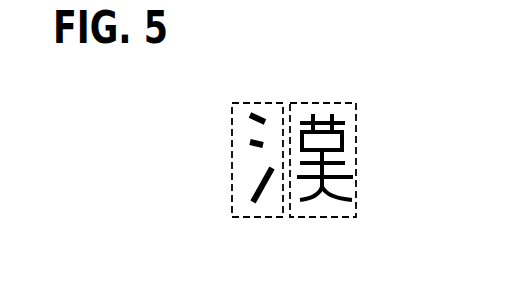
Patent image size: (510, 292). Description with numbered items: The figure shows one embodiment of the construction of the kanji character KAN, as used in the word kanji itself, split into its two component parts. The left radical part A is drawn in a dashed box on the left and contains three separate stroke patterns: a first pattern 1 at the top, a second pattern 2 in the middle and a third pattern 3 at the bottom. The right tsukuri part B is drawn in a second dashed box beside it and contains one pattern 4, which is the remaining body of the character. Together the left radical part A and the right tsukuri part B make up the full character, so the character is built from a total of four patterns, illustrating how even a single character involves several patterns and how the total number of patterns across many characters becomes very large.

The left radical part A is at (257, 102).
The right tsukuri part B is at (330, 102).
The first pattern 1 is at (250, 116).
The second pattern 2 is at (250, 144).
The third pattern 3 is at (257, 184).
The pattern of the right part 4 is at (338, 148).